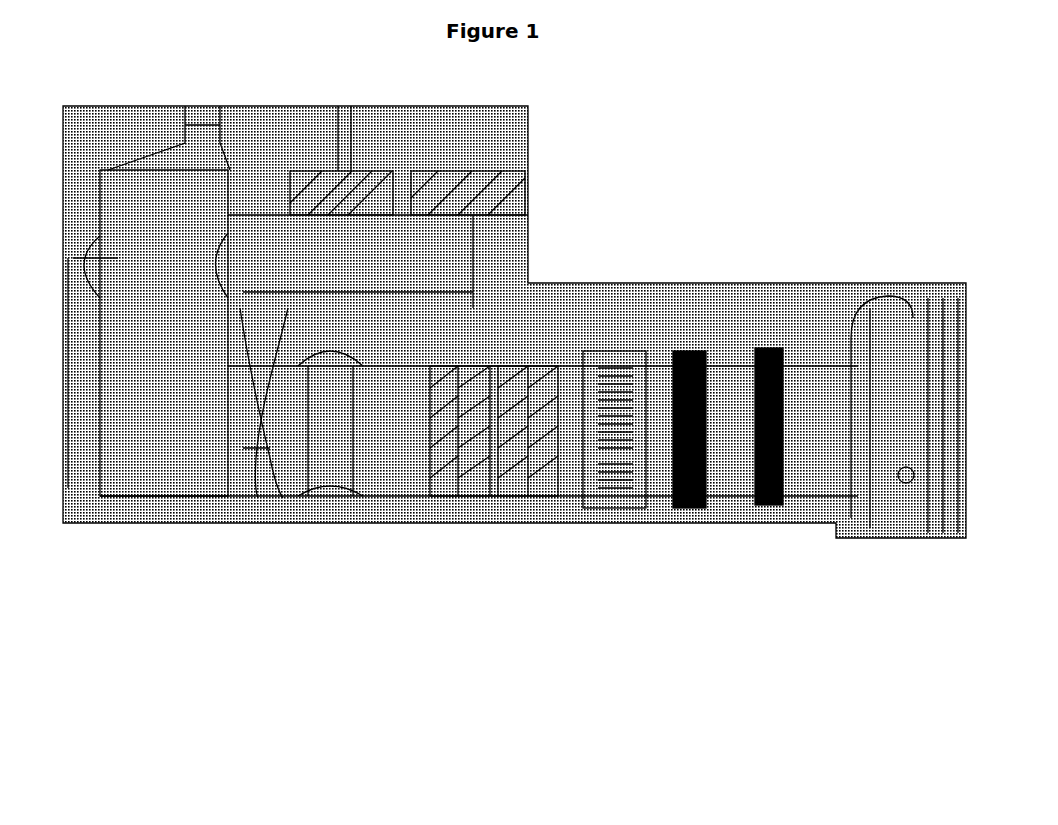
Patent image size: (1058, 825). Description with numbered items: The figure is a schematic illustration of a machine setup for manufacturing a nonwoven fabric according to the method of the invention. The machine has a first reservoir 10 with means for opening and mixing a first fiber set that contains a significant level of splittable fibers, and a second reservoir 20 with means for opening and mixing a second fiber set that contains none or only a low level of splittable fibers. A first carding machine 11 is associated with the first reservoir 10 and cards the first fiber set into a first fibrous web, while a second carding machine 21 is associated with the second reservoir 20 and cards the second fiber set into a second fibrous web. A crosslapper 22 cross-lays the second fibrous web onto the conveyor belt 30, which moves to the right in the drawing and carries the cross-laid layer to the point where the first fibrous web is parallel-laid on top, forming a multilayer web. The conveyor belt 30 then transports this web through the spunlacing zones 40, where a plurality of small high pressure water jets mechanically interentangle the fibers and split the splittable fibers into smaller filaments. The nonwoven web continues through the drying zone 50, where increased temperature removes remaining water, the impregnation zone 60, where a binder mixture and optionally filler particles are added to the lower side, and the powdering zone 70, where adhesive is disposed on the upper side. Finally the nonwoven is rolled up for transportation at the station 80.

The first reservoir 10 is at (413, 188).
The first carding machine 11 is at (310, 438).
The second reservoir 20 is at (372, 183).
The second carding machine 21 is at (60, 480).
The crosslapper 22 is at (185, 457).
The conveyor belt 30 is at (252, 478).
The spunlacing zones 40 is at (477, 420).
The drying zone 50 is at (610, 448).
The impregnation zone 60 is at (688, 490).
The powdering zone 70 is at (767, 490).
The station 80 is at (884, 492).